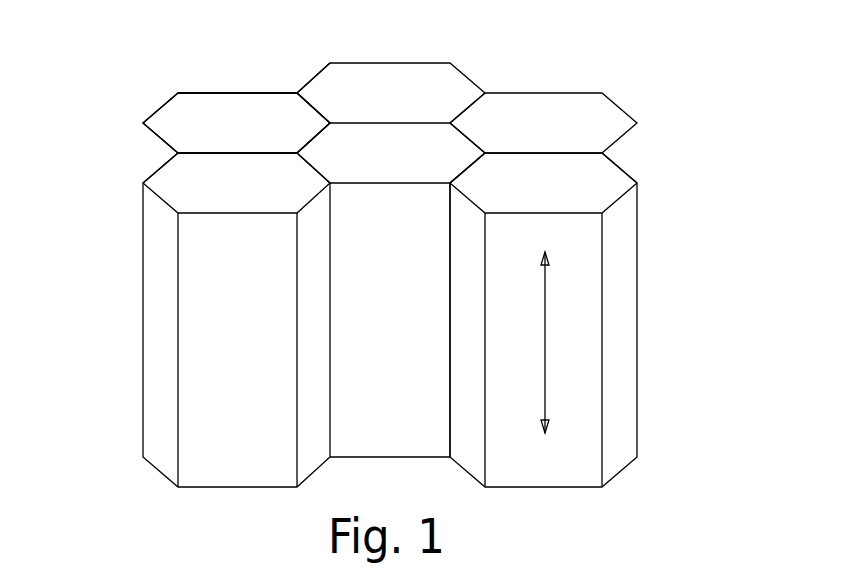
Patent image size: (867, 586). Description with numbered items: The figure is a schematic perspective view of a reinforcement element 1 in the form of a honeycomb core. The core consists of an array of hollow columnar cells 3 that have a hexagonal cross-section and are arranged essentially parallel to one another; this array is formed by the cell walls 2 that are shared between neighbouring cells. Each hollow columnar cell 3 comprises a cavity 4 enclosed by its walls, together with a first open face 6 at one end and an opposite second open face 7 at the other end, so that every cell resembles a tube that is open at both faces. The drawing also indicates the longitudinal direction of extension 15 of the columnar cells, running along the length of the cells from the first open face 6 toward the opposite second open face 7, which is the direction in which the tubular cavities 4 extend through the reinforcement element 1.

The reinforcement element 1 is at (622, 110).
The cell wall 2 is at (318, 75).
The columnar cell 3 is at (158, 112).
The cavity 4 is at (218, 332).
The first open face 6 is at (568, 187).
The opposite second open face 7 is at (572, 452).
The longitudinal direction of extension 15 is at (545, 330).